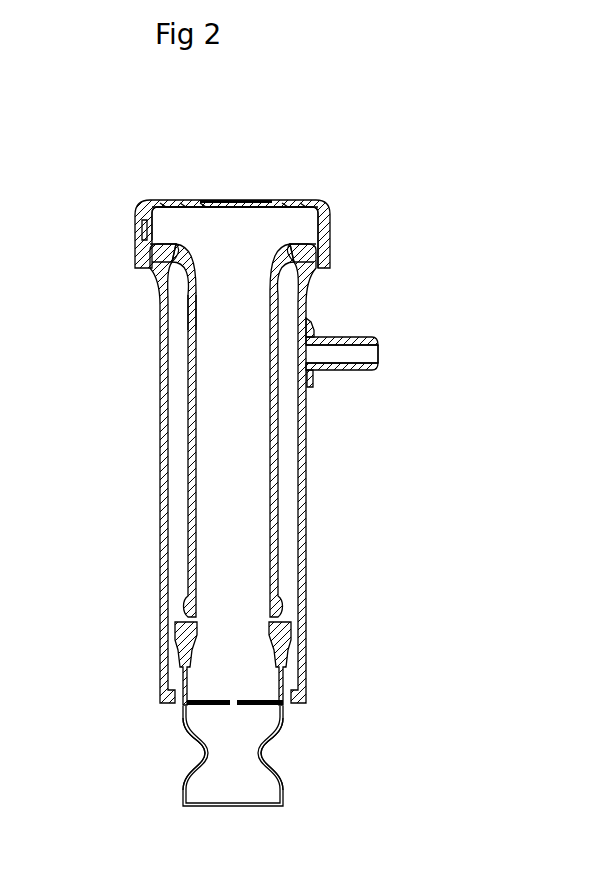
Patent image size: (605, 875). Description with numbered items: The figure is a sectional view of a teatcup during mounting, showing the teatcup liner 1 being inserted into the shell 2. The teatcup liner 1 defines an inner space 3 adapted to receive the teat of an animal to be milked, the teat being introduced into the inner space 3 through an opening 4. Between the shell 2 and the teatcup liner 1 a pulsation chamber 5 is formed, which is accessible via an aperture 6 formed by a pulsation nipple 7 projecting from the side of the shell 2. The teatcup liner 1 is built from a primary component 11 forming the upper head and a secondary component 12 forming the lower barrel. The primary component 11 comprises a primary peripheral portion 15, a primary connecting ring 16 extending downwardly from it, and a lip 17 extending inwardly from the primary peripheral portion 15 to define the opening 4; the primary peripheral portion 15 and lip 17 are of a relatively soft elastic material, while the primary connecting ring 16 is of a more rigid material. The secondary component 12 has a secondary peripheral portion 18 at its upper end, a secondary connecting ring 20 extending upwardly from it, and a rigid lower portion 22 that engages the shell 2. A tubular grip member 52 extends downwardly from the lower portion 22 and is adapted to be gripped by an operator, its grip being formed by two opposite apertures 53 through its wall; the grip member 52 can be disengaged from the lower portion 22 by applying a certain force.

The teatcup liner 1 is at (273, 437).
The shell 2 is at (302, 487).
The inner space 3 is at (231, 411).
The opening 4 is at (226, 202).
The pulsation chamber 5 is at (186, 473).
The aperture 6 is at (305, 350).
The pulsation nipple 7 is at (360, 337).
The primary component 11 is at (135, 218).
The secondary component 12 is at (186, 292).
The primary peripheral portion 15 is at (145, 218).
The primary connecting ring 16 is at (148, 230).
The lip 17 is at (187, 200).
The secondary peripheral portion 18 is at (308, 262).
The secondary connecting ring 20 is at (152, 240).
The lower portion 22 is at (280, 643).
The grip member 52 is at (285, 710).
The apertures 53 is at (262, 752).